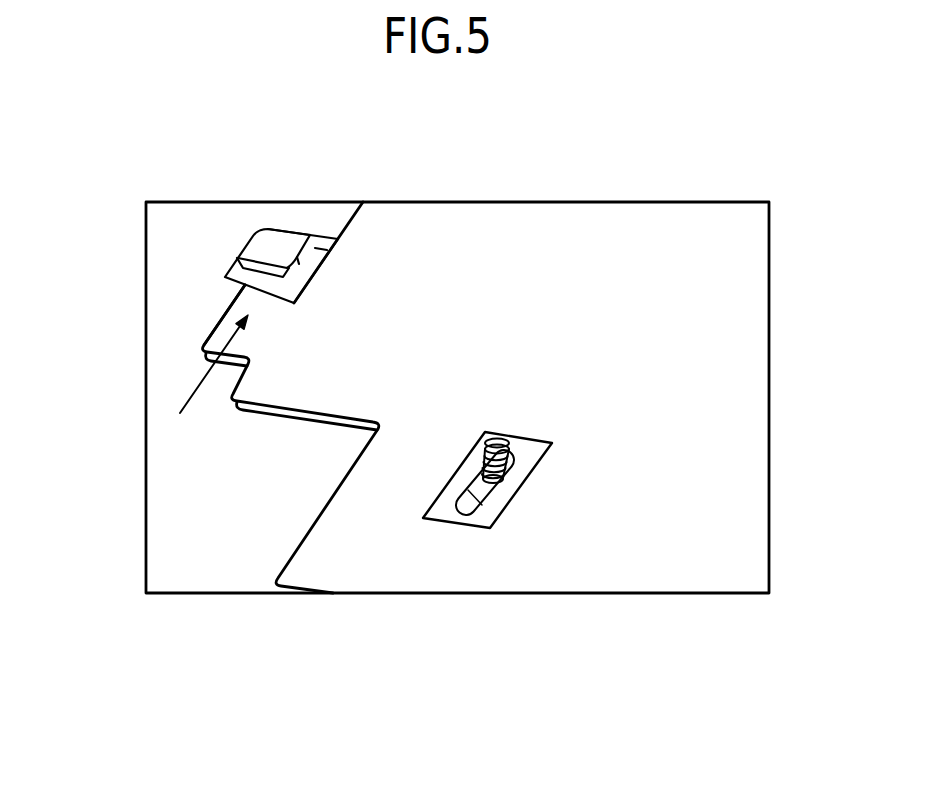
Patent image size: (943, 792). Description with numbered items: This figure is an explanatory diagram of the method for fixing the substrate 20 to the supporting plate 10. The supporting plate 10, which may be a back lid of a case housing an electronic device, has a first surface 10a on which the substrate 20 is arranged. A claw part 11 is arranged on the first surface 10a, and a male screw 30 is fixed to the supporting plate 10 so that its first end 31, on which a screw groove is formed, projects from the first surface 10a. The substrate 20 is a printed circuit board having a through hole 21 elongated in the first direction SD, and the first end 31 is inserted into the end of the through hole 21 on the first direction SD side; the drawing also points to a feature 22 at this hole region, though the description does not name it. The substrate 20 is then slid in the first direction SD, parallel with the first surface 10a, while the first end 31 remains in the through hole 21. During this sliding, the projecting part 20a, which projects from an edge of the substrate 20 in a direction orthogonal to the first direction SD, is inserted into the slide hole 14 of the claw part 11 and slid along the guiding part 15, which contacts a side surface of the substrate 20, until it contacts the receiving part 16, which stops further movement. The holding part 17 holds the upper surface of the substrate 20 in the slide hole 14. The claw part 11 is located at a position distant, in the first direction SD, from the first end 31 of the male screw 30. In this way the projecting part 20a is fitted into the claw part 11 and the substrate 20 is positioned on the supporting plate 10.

The supporting plate 10 is at (413, 397).
The first surface 10a is at (178, 492).
The claw part 11 is at (185, 230).
The slide hole 14 is at (277, 281).
The guiding part 15 is at (228, 270).
The receiving part 16 is at (323, 244).
The holding part 17 is at (267, 248).
The substrate 20 is at (398, 222).
The projecting part 20a is at (222, 326).
The first direction SD is at (210, 365).
The through hole 21 is at (483, 527).
The slot 22 is at (530, 452).
The male screw 30 is at (522, 308).
The first end 31 is at (503, 437).